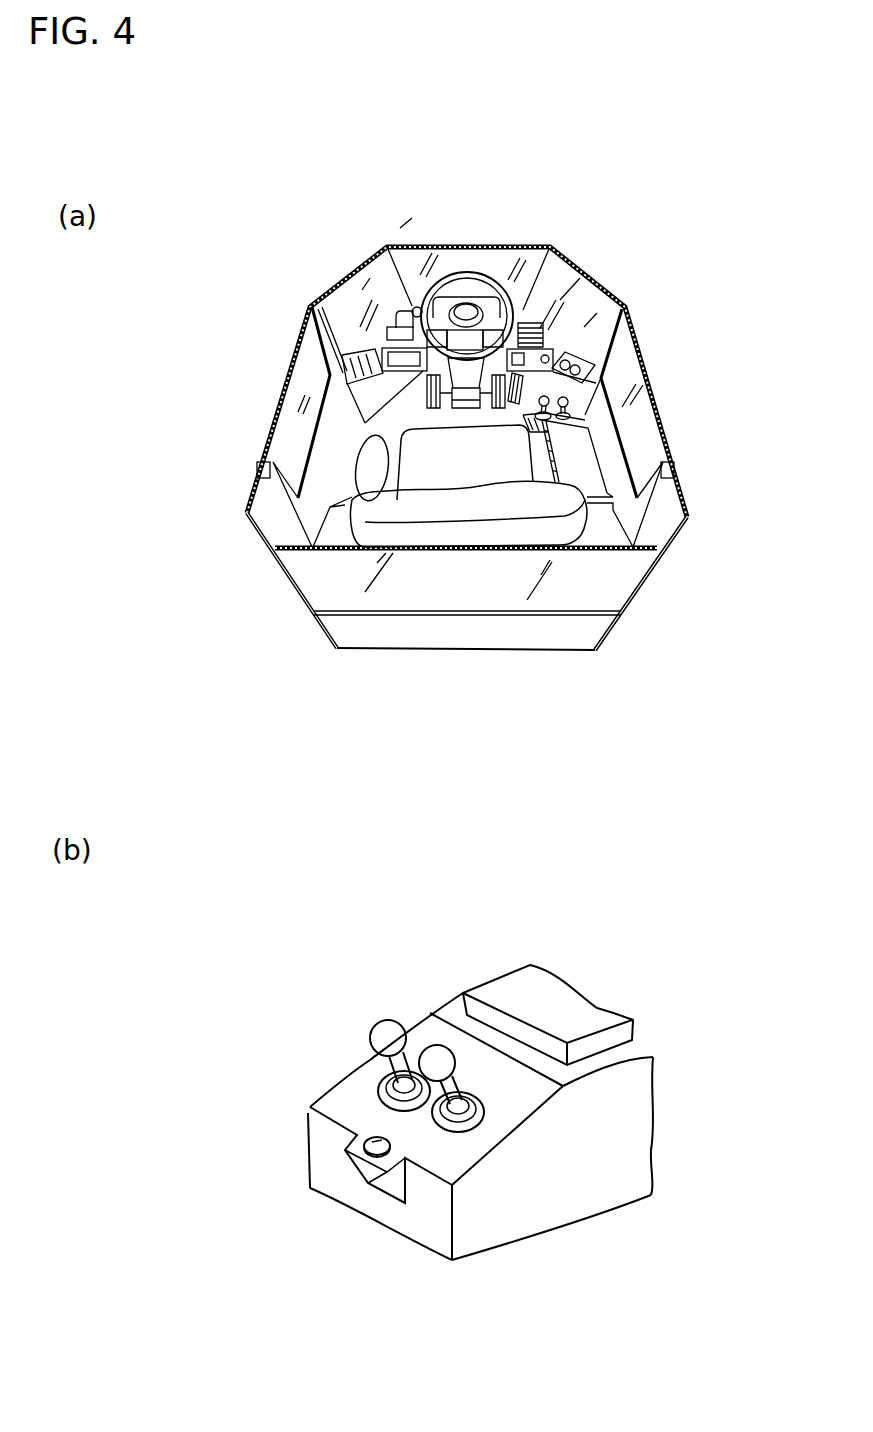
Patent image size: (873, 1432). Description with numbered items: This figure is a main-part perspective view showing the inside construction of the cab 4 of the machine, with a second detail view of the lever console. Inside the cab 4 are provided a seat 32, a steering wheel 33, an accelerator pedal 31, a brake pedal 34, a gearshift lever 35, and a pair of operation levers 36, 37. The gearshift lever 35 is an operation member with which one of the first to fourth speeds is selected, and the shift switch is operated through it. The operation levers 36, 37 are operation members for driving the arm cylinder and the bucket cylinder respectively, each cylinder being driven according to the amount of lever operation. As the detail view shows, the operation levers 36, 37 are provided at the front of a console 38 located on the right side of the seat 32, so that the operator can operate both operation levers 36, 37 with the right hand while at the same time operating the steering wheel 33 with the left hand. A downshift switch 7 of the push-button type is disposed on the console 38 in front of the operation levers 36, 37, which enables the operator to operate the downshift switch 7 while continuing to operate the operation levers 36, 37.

The cab 4 is at (467, 637).
The accelerator pedal 31 is at (527, 378).
The seat 32 is at (407, 467).
The steering wheel 33 is at (463, 277).
The brake pedal 34 is at (387, 335).
The gearshift lever 35 is at (398, 328).
The operation lever 36 is at (567, 402).
The operation lever 37 is at (548, 400).
The console 38 is at (582, 457).
The downshift switch 7 is at (375, 1147).